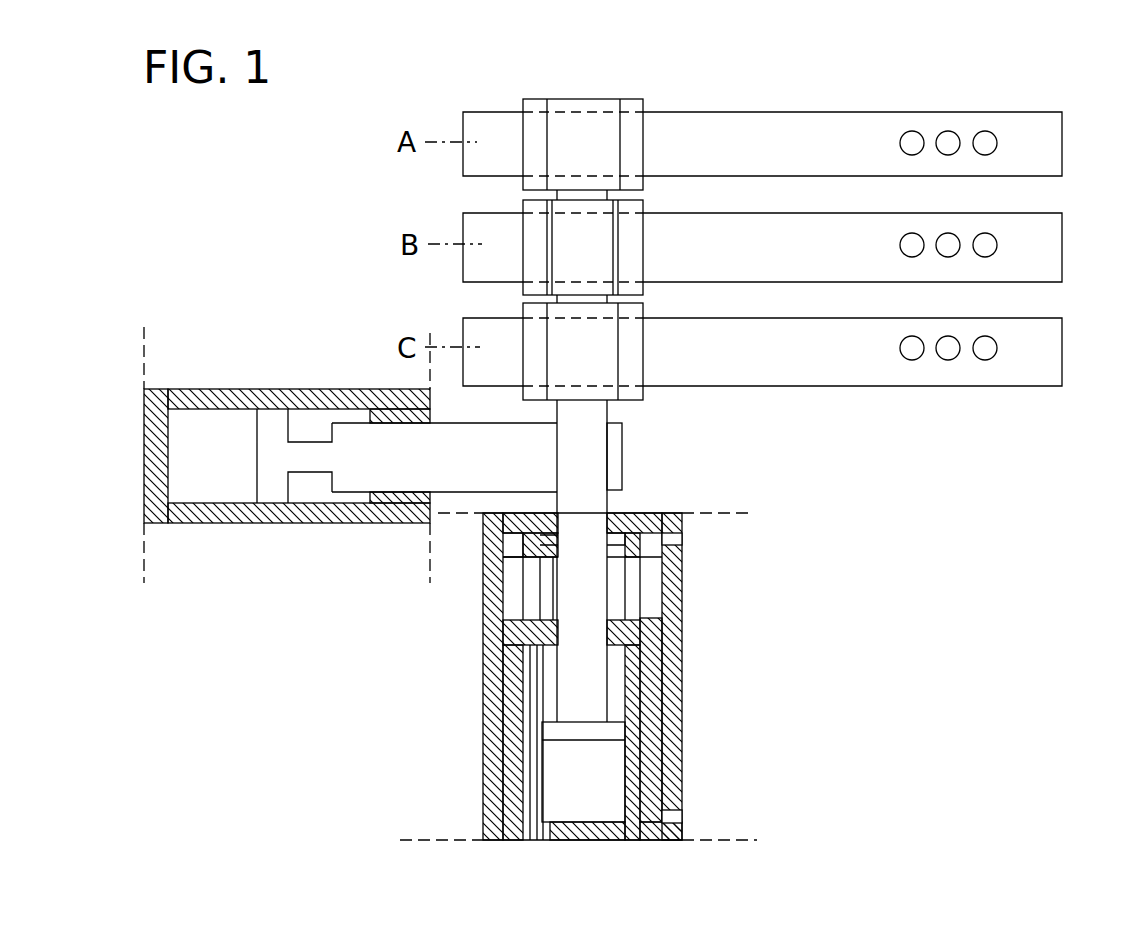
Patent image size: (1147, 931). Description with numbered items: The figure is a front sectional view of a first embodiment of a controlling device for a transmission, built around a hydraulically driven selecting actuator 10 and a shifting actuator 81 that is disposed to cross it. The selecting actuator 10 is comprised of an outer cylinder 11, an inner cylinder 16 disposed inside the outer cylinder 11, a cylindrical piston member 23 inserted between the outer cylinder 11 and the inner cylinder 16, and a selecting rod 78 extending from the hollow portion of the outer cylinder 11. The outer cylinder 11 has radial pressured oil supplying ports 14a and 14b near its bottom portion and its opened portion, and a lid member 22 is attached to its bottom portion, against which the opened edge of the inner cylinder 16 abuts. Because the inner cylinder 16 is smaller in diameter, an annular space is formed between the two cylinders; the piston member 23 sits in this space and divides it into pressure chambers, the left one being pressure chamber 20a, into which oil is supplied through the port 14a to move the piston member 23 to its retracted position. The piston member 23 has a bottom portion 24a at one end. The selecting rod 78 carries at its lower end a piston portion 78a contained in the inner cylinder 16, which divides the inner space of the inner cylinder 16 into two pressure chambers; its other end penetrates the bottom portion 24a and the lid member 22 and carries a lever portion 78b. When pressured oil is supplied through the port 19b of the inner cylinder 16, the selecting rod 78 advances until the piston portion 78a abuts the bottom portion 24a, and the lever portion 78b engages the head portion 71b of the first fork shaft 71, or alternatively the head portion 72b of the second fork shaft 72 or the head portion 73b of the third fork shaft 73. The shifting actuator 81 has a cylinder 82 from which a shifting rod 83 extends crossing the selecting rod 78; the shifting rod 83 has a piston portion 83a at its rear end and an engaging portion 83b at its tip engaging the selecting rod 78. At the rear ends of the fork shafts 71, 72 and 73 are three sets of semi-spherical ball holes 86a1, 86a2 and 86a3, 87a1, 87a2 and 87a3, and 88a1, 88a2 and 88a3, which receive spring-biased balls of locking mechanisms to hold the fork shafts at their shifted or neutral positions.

The selecting actuator 10 is at (576, 706).
The outer cylinder 11 is at (678, 712).
The pressured oil supplying port 14a is at (672, 540).
The pressured oil supplying port 14b is at (672, 818).
The inner cylinder 16 is at (615, 833).
The port 19b is at (548, 838).
The pressure chamber 20a is at (650, 583).
The lid member 22 is at (520, 552).
The piston member 23 is at (653, 662).
The bottom portion 24a is at (638, 630).
The first fork shaft 71 is at (1076, 118).
The head portion 71b is at (641, 104).
The second fork shaft 72 is at (1076, 214).
The head portion 72b is at (527, 206).
The third fork shaft 73 is at (1076, 337).
The head portion 73b is at (632, 395).
The selecting rod 78 is at (600, 505).
The piston portion 78a is at (583, 736).
The lever portion 78b is at (558, 262).
The shifting actuator 81 is at (287, 465).
The cylinder 82 is at (228, 389).
The shifting rod 83 is at (475, 478).
The piston portion 83a is at (267, 494).
The engaging portion 83b is at (622, 469).
The ball hole 86a1 is at (904, 134).
The ball hole 86a2 is at (948, 131).
The ball hole 86a3 is at (988, 132).
The ball hole 87a1 is at (904, 236).
The ball hole 87a2 is at (948, 233).
The ball hole 87a3 is at (988, 234).
The ball hole 88a1 is at (905, 359).
The ball hole 88a2 is at (945, 360).
The ball hole 88a3 is at (985, 360).